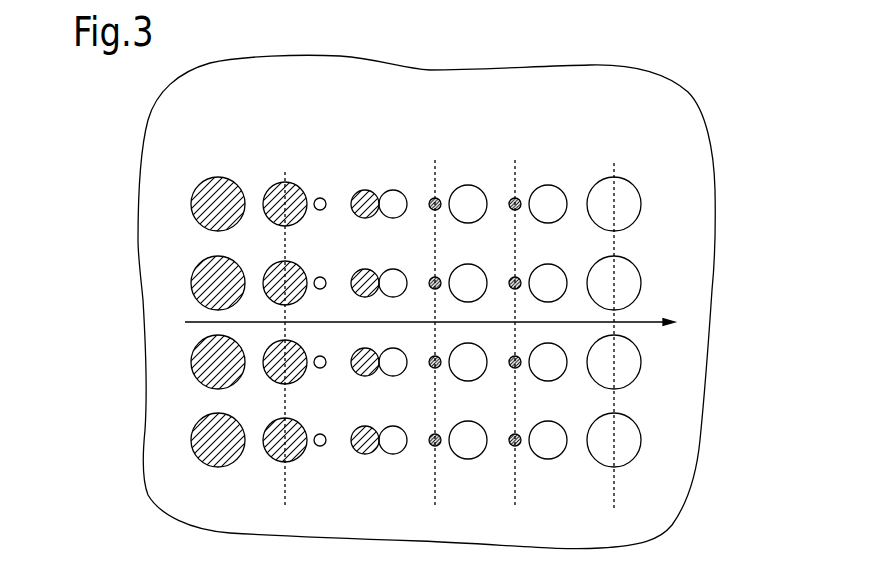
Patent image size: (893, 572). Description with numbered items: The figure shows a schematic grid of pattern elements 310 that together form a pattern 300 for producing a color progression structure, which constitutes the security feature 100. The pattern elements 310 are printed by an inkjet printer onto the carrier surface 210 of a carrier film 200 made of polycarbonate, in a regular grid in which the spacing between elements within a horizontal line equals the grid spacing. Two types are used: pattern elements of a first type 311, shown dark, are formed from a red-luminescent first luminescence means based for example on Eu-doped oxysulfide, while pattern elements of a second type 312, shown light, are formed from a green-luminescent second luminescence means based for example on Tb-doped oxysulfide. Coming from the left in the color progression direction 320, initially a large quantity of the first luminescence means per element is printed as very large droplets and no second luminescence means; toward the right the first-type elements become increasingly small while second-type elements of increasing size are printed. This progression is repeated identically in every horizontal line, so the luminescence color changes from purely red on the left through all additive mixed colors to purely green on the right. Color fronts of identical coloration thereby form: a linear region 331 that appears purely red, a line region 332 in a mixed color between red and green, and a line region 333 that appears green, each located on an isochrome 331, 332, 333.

The security feature 100 is at (500, 265).
The carrier film 200 is at (450, 301).
The carrier surface 210 is at (693, 217).
The pattern 300 is at (500, 265).
The pattern elements 310 is at (299, 265).
The pattern elements of a first type 311 is at (226, 177).
The pattern elements of a second type 312 is at (349, 298).
The color progression direction 320 is at (627, 323).
The linear region (isochrome) 331 is at (285, 490).
The line region (isochrome) 332 is at (435, 488).
The line region (isochrome) 333 is at (614, 500).